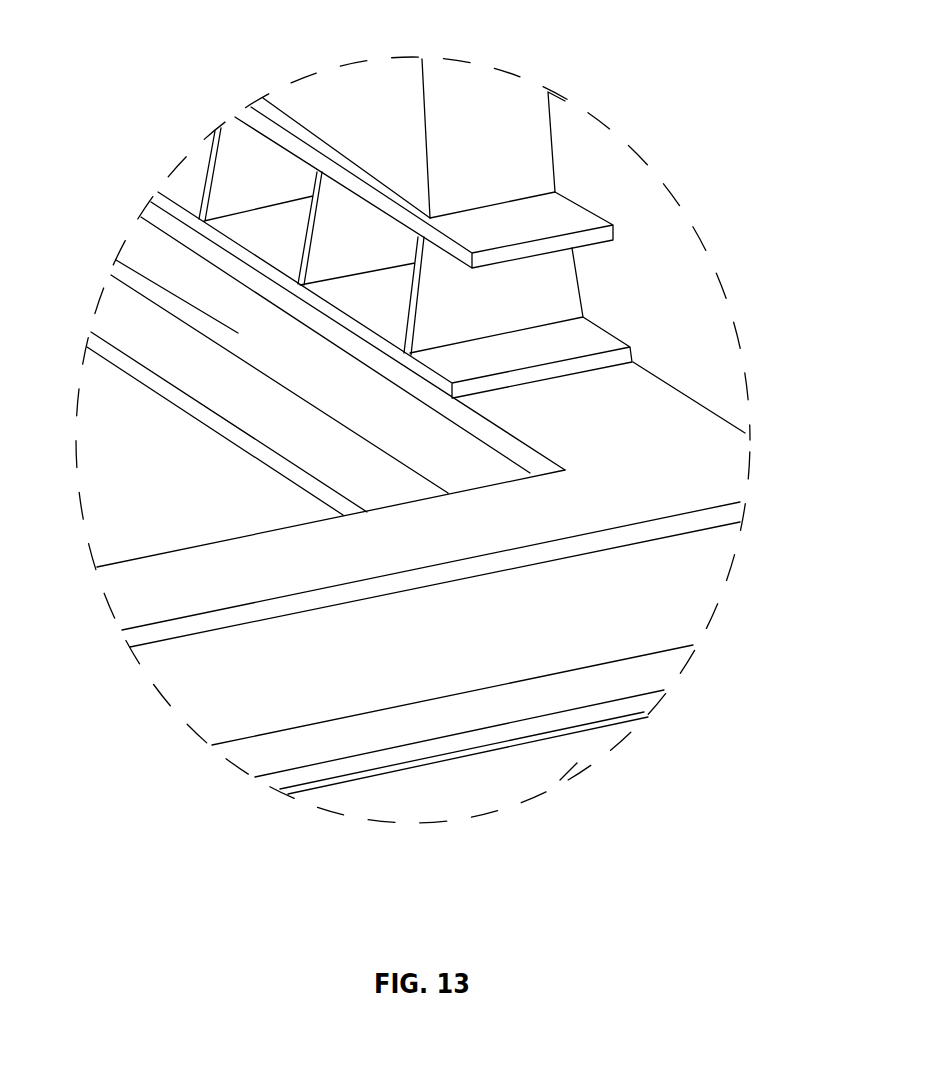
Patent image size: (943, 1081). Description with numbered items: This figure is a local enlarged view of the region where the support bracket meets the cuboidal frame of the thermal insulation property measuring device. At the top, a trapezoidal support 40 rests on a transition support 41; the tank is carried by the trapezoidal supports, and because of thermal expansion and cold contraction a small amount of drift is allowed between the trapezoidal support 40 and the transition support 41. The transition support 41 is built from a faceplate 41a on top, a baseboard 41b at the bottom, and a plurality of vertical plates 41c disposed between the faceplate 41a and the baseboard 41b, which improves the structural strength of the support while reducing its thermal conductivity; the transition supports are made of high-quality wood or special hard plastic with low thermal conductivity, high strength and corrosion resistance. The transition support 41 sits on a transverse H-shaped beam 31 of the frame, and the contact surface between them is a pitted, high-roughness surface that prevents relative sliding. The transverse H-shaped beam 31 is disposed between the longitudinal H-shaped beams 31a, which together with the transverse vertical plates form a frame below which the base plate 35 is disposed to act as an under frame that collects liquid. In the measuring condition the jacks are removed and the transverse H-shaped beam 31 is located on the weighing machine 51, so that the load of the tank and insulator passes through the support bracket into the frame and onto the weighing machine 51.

The trapezoidal support 40 is at (493, 115).
The transition support 41 is at (449, 284).
The faceplate 41a is at (582, 218).
The baseboard 41b is at (603, 345).
The vertical plates 41c is at (327, 232).
The transverse H-shaped beam 31 is at (113, 260).
The base plate 35 is at (148, 503).
The longitudinal H-shaped beam 31a is at (213, 655).
The weighing machine 51 is at (562, 768).